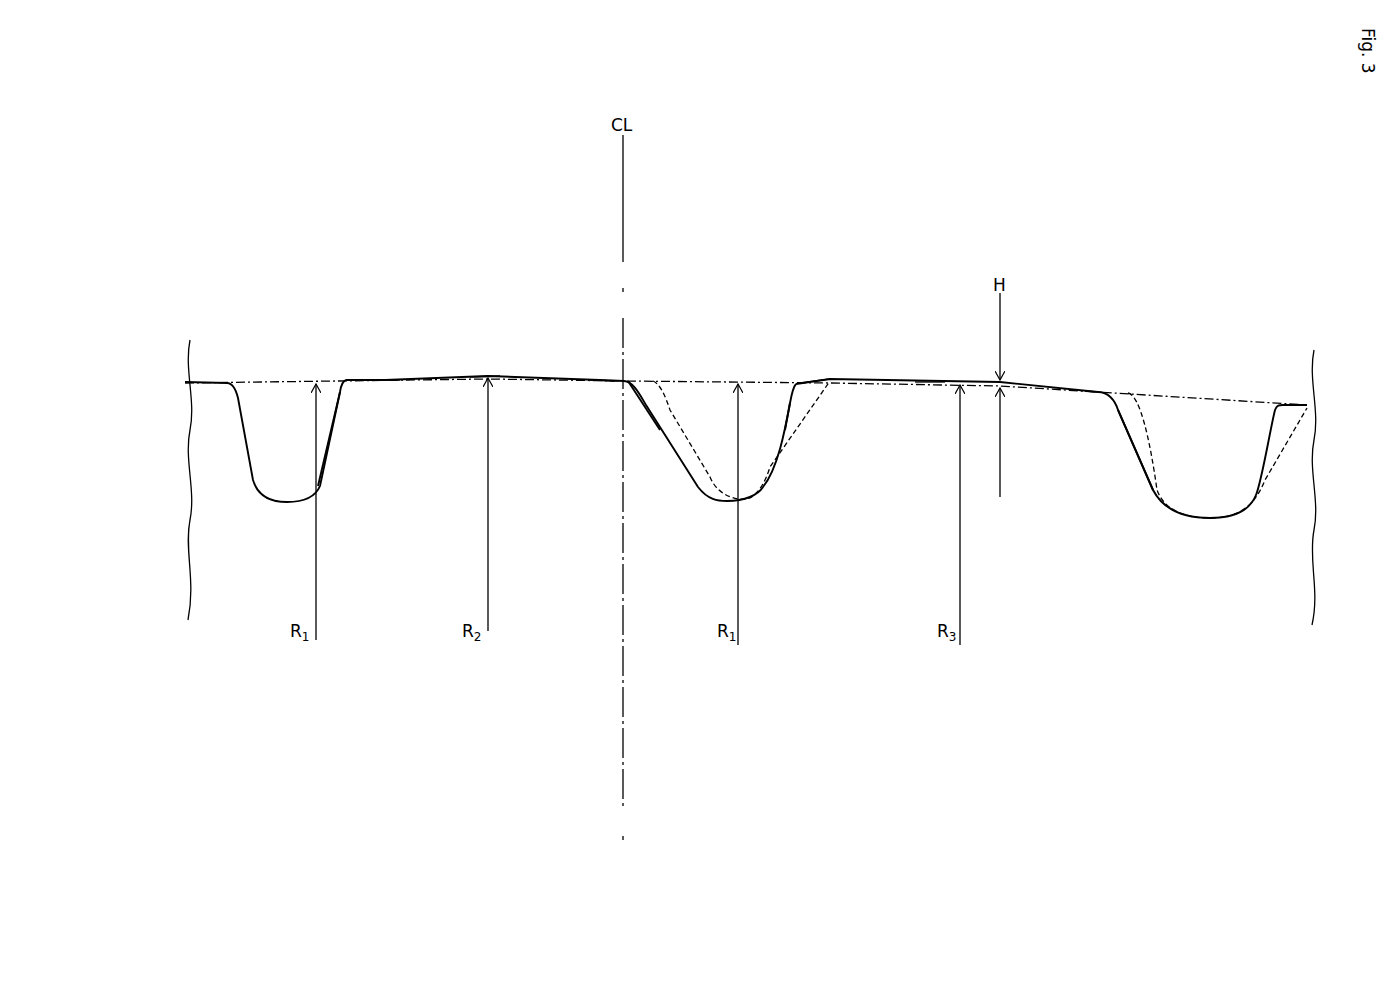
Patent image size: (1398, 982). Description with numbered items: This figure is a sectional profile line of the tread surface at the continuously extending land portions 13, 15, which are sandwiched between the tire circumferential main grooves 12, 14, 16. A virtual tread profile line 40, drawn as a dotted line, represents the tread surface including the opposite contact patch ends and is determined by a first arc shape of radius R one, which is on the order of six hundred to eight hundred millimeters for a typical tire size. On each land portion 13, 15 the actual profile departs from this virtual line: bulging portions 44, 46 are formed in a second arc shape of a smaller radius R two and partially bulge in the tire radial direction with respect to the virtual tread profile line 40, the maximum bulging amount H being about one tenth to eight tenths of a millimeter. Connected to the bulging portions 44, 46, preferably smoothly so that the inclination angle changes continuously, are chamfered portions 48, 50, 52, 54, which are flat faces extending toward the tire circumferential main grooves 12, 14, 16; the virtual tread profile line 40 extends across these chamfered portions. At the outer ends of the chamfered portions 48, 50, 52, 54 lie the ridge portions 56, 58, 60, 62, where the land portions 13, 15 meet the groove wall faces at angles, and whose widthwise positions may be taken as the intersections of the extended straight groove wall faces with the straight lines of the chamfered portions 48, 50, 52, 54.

The tire circumferential main groove 12 is at (283, 392).
The continuously extending land portion 13 is at (426, 393).
The tire circumferential main groove 14 is at (715, 405).
The continuously extending land portion 15 is at (897, 405).
The tire circumferential main groove 16 is at (1195, 440).
The virtual tread profile line 40 is at (1155, 395).
The bulging portion 44 is at (461, 375).
The bulging portion 46 is at (930, 378).
The chamfered portion 48 is at (383, 378).
The chamfered portion 50 is at (598, 378).
The chamfered portion 52 is at (816, 377).
The chamfered portion 54 is at (1081, 388).
The ridge portion 56 is at (346, 386).
The ridge portion 58 is at (626, 392).
The ridge portion 60 is at (793, 395).
The ridge portion 62 is at (1097, 396).